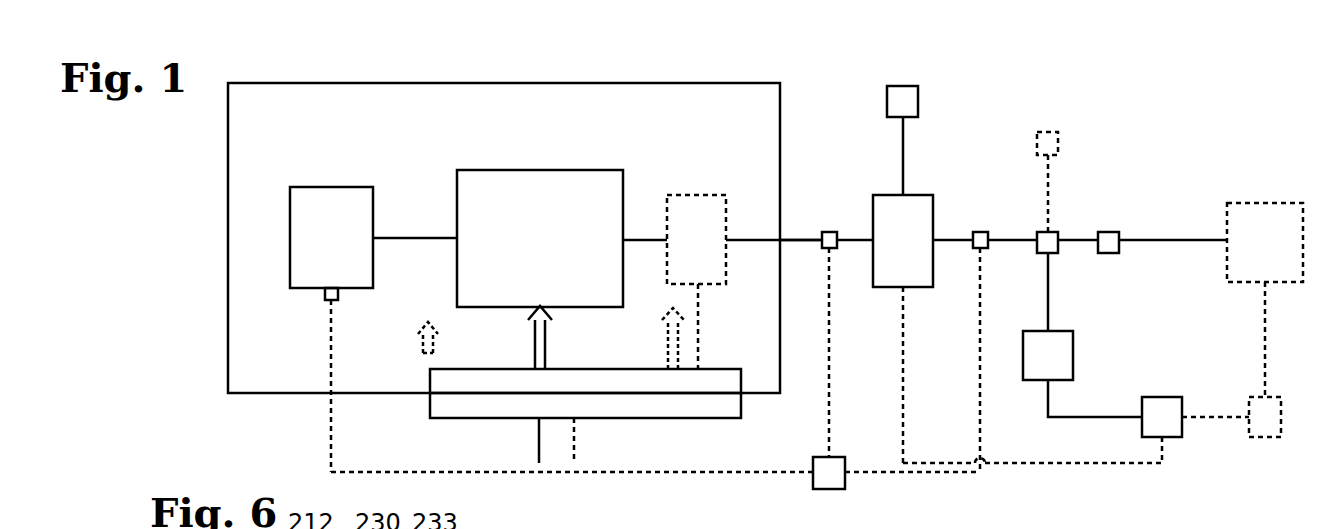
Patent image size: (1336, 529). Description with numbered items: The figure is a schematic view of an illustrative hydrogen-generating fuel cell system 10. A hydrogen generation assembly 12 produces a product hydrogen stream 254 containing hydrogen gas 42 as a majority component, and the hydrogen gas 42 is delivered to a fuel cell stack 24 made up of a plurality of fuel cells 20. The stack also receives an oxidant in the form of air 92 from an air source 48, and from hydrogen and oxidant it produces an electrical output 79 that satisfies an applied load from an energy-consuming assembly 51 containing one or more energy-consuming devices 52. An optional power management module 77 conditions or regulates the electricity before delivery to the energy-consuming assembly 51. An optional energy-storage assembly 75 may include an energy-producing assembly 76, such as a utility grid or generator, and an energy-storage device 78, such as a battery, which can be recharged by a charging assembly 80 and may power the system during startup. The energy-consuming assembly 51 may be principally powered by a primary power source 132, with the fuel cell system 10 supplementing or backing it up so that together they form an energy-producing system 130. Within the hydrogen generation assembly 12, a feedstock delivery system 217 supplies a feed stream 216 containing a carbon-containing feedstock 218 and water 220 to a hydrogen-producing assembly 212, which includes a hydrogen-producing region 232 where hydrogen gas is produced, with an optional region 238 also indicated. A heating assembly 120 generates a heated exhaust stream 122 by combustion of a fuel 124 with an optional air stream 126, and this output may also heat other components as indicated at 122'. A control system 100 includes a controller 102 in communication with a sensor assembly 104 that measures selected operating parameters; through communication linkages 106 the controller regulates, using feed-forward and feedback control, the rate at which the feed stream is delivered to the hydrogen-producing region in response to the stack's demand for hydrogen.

The hydrogen-generating fuel cell system 10 is at (1283, 104).
The hydrogen generation assembly 12 is at (192, 172).
The fuel cell 20 is at (895, 195).
The fuel cell stack 24 is at (923, 187).
The hydrogen gas 42 is at (793, 242).
The air source 48 is at (905, 86).
The energy-consuming assembly 51 is at (1245, 203).
The energy-consuming device 52 is at (1276, 201).
The energy-storage assembly 75 is at (1065, 315).
The energy-producing assembly 76 is at (1060, 142).
The power management module 77 is at (1055, 232).
The energy-storage device 78 is at (1073, 368).
The electrical output 79 is at (1040, 240).
The charging assembly 80 is at (1162, 397).
The air 92 is at (903, 145).
The control system 100 is at (812, 484).
The controller 102 is at (826, 489).
The sensor assembly 104 is at (328, 302).
The communication linkage 106 is at (827, 423).
The heating assembly 120 is at (440, 432).
The heated exhaust stream 122 is at (567, 337).
The heated exhaust stream to other components 122' is at (551, 338).
The fuel 124 is at (539, 440).
The air stream 126 is at (574, 440).
The energy-producing system 130 is at (1285, 347).
The primary power source 132 is at (1284, 418).
The hydrogen-producing assembly 212 is at (487, 170).
The feed stream 216 is at (410, 238).
The feedstock delivery system 217 is at (290, 227).
The carbon-containing feedstock 218 is at (448, 240).
The water 220 is at (388, 240).
The hydrogen-producing region 232 is at (515, 195).
The purification region 238 is at (584, 188).
The product hydrogen stream 254 is at (801, 236).